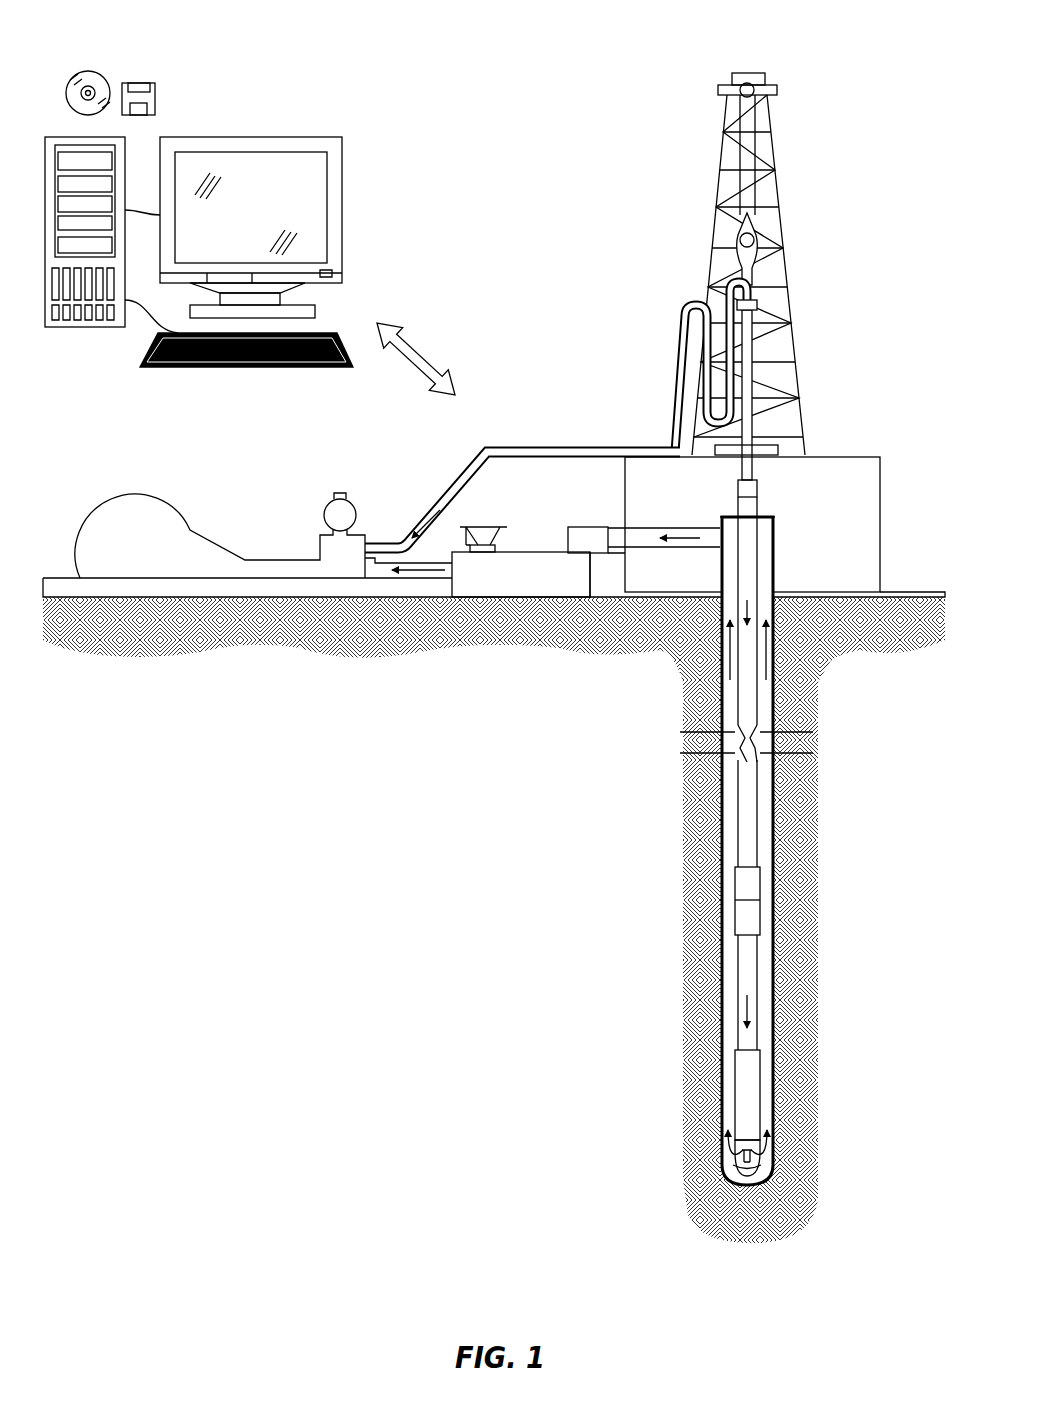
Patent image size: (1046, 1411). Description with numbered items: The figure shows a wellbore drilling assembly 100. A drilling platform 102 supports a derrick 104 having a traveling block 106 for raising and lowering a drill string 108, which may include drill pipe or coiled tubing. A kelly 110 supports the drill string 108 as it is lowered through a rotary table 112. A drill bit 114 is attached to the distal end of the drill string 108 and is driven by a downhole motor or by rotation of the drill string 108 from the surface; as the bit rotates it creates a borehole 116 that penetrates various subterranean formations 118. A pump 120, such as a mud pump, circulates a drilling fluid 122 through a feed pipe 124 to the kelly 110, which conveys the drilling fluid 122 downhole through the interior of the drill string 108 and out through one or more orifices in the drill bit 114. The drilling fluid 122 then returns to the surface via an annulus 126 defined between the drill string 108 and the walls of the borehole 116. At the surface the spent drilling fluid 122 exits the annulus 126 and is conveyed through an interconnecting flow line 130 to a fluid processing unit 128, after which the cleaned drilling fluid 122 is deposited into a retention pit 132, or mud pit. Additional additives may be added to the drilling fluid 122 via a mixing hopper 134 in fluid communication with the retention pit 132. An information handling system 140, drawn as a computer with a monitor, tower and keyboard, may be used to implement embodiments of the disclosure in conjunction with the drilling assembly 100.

The drilling assembly 100 is at (540, 222).
The drilling platform 102 is at (882, 495).
The derrick 104 is at (775, 152).
The traveling block 106 is at (762, 225).
The drill string 108 is at (760, 690).
The kelly 110 is at (745, 375).
The rotary table 112 is at (760, 450).
The drill bit 114 is at (776, 1170).
The borehole 116 is at (778, 790).
The subterranean formations 118 is at (644, 925).
The pump 120 is at (156, 563).
The drilling fluid 122 is at (408, 535).
The feed pipe 124 is at (518, 447).
The annulus 126 is at (768, 1010).
The fluid processing unit 128 is at (588, 530).
The interconnecting flow line 130 is at (710, 548).
The retention pit 132 is at (554, 593).
The mixing hopper 134 is at (492, 533).
The information handling system 140 is at (305, 52).